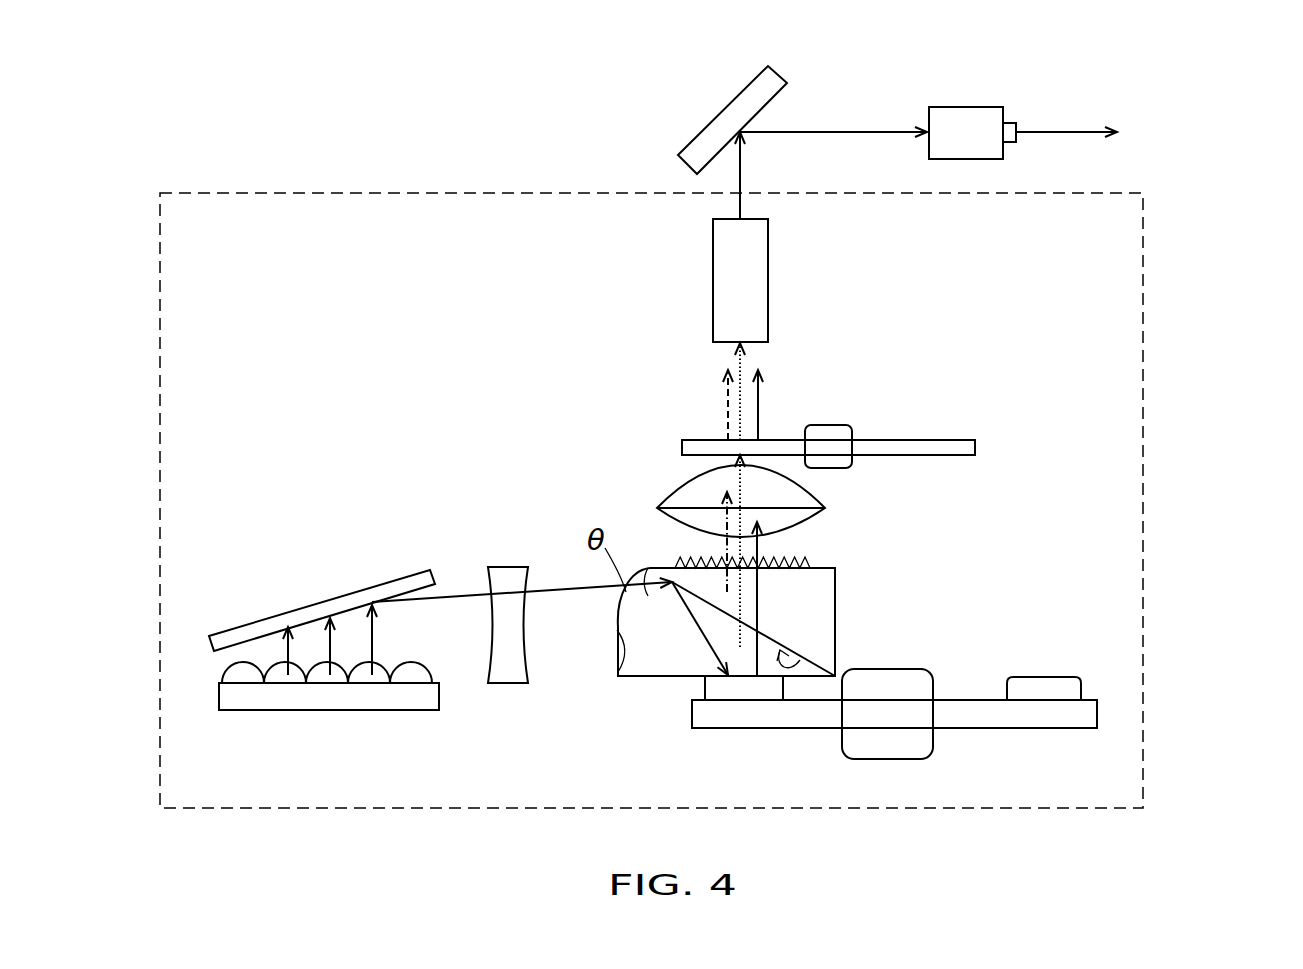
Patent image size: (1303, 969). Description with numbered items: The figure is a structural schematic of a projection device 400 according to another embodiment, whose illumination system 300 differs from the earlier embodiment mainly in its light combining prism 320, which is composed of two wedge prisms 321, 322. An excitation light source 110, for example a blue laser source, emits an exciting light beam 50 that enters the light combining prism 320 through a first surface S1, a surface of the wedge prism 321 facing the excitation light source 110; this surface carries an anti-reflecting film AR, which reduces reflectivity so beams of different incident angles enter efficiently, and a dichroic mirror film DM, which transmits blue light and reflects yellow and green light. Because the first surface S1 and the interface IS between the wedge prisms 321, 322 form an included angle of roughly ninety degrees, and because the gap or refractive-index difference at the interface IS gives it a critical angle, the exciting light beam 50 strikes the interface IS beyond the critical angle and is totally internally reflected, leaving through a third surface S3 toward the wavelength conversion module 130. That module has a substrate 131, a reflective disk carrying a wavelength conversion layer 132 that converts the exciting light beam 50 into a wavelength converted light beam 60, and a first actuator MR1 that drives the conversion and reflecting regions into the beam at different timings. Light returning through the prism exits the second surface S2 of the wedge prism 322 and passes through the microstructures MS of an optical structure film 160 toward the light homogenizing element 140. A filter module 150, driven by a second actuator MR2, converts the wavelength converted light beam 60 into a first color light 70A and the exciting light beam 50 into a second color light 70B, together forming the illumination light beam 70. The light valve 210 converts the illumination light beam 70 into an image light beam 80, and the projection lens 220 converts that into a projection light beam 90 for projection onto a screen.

The illumination system 300 is at (160, 763).
The projection device 400 is at (1263, 831).
The light valve 210 is at (727, 117).
The illumination light beam 70 is at (742, 168).
The first color light 70A is at (740, 365).
The second color light 70B is at (758, 412).
The image light beam 80 is at (853, 130).
The projection lens 220 is at (967, 118).
The projection light beam 90 is at (1065, 130).
The light homogenizing element 140 is at (751, 281).
The filter module 150 is at (977, 446).
The second actuator MR2 is at (830, 436).
The optical structure film 160 is at (692, 560).
The wavelength converted light beam 60 is at (727, 515).
The microstructures MS is at (778, 557).
The second surface S2 is at (828, 566).
The light combining prism 320 is at (727, 766).
The wedge prism 321 is at (670, 655).
The wedge prism 322 is at (790, 610).
The interface IS is at (795, 666).
The anti-reflecting film AR is at (617, 612).
The dichroic mirror film DM is at (612, 648).
The third surface S3 is at (643, 678).
The exciting light beam 50 is at (376, 638).
The excitation light source 110 is at (284, 695).
The first surface S1 is at (501, 644).
The substrate 131 is at (1083, 716).
The wavelength conversion layer 132 is at (778, 688).
The first actuator MR1 is at (905, 738).
The wavelength conversion module 130 is at (1213, 637).